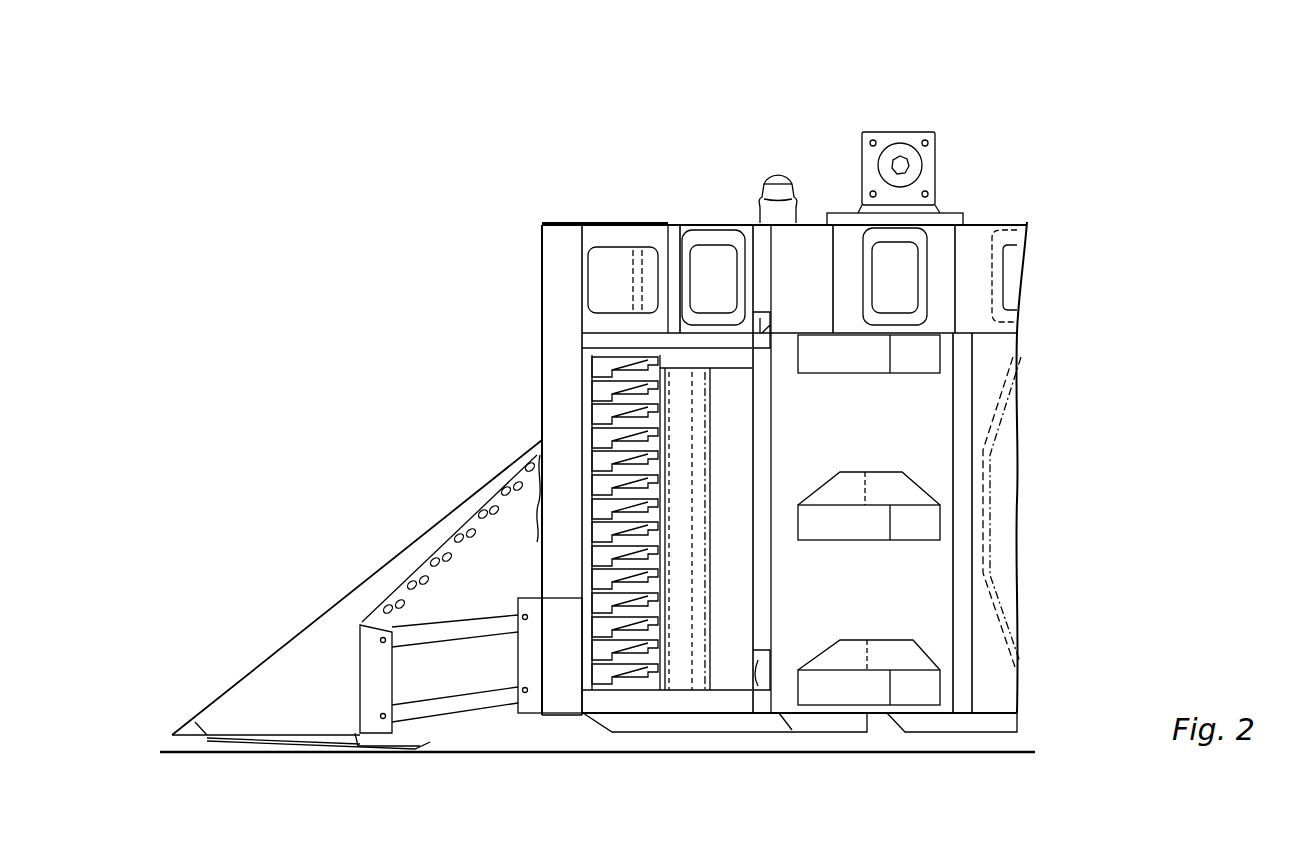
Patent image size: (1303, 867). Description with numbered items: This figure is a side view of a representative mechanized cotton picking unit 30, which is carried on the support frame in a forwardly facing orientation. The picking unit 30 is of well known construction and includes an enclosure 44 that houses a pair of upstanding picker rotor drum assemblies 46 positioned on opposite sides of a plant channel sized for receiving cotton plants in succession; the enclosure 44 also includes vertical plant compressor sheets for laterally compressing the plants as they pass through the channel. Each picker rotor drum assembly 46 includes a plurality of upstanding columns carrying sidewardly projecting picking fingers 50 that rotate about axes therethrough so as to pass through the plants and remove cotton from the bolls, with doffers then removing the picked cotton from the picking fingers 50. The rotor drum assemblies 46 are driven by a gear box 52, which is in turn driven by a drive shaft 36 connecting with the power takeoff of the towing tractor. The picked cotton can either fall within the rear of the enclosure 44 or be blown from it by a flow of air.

The cotton picking unit 30 is at (468, 357).
The drive shaft 36 is at (900, 150).
The enclosure 44 is at (648, 224).
The picker rotor drum assembly 46 is at (720, 482).
The picking fingers 50 is at (658, 598).
The gear box 52 is at (937, 147).